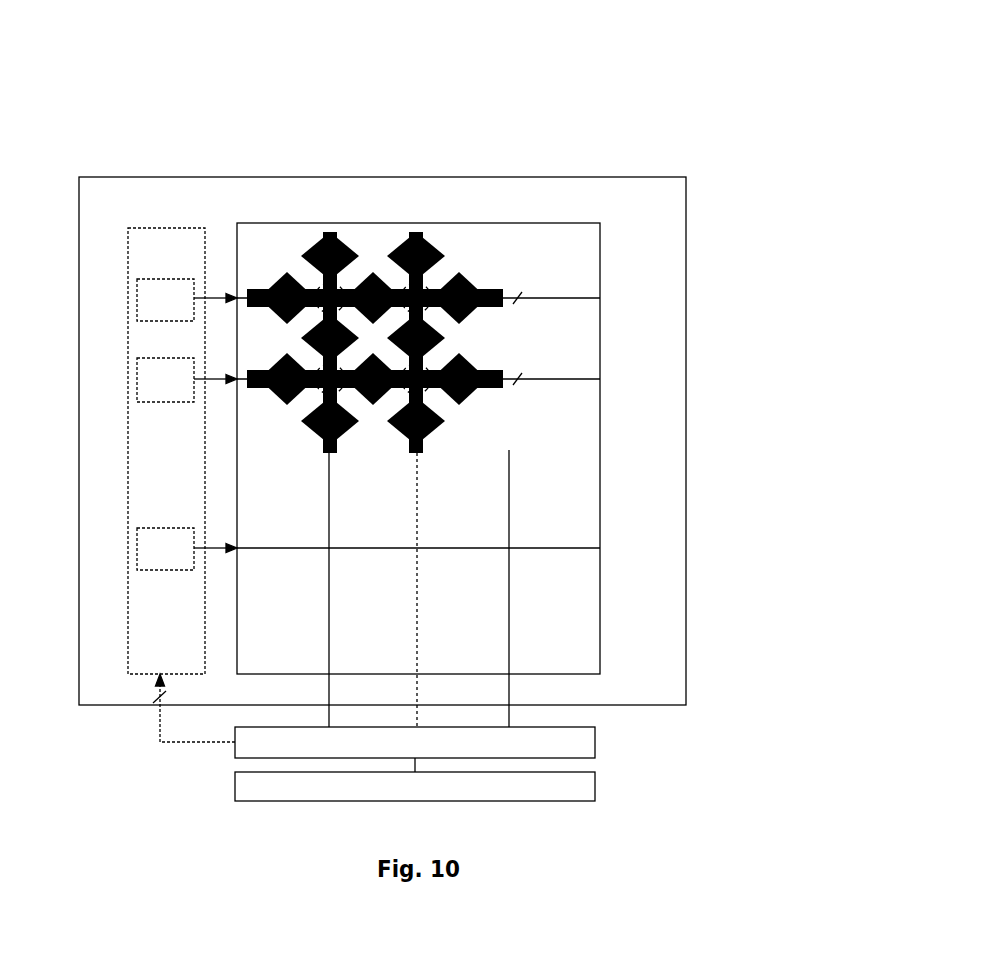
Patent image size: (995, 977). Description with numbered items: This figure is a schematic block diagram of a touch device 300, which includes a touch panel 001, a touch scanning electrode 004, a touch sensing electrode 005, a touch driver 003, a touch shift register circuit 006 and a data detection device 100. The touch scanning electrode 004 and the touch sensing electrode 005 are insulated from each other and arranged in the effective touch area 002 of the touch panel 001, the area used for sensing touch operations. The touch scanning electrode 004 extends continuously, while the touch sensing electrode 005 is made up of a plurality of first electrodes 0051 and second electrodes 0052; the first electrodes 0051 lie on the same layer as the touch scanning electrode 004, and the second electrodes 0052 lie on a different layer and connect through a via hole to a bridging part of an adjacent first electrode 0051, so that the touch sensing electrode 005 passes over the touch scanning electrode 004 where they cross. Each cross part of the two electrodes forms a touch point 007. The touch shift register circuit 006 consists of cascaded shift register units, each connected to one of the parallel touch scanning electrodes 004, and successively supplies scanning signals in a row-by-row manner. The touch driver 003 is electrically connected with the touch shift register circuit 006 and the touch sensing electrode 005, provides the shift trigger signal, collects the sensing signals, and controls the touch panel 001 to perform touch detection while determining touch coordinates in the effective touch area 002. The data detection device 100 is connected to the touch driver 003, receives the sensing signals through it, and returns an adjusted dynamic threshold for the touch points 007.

The touch device 300 is at (753, 30).
The touch panel 001 is at (686, 398).
The effective touch area 002 is at (555, 497).
The touch driver 003 is at (595, 741).
The data detection device 100 is at (595, 786).
The touch scanning electrode 004 is at (291, 298).
The touch sensing electrode 005 is at (400, 250).
The first electrode 0051 is at (415, 250).
The second electrode 0052 is at (464, 298).
The touch shift register circuit 006 is at (128, 427).
The touch point 007 is at (433, 362).